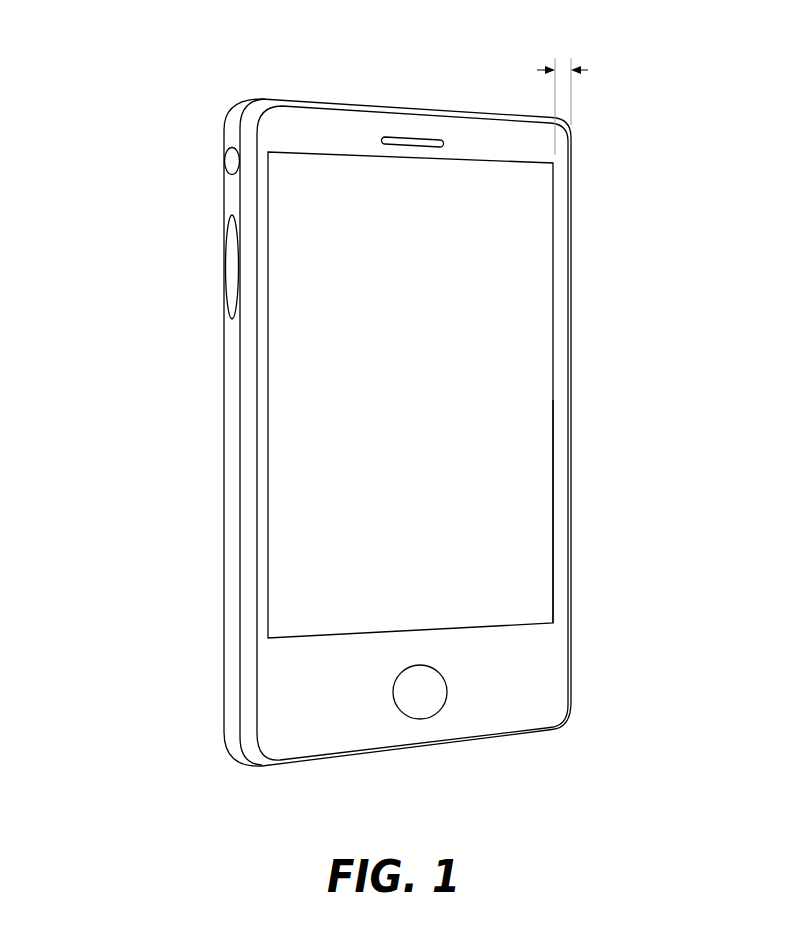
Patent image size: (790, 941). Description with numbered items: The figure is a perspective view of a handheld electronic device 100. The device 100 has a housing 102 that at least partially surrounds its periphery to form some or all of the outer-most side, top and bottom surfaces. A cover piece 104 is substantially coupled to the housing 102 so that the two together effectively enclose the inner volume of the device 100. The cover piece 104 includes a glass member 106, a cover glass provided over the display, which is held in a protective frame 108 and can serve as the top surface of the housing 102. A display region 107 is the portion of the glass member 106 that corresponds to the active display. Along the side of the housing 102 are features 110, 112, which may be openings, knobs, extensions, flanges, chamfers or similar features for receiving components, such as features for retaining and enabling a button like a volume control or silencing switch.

The handheld electronic device 100 is at (176, 49).
The housing 102 is at (318, 102).
The cover piece 104 is at (247, 584).
The glass member 106 is at (521, 330).
The display region 107 is at (543, 522).
The protective frame 108 is at (248, 552).
The feature 110 is at (230, 164).
The feature 112 is at (228, 266).